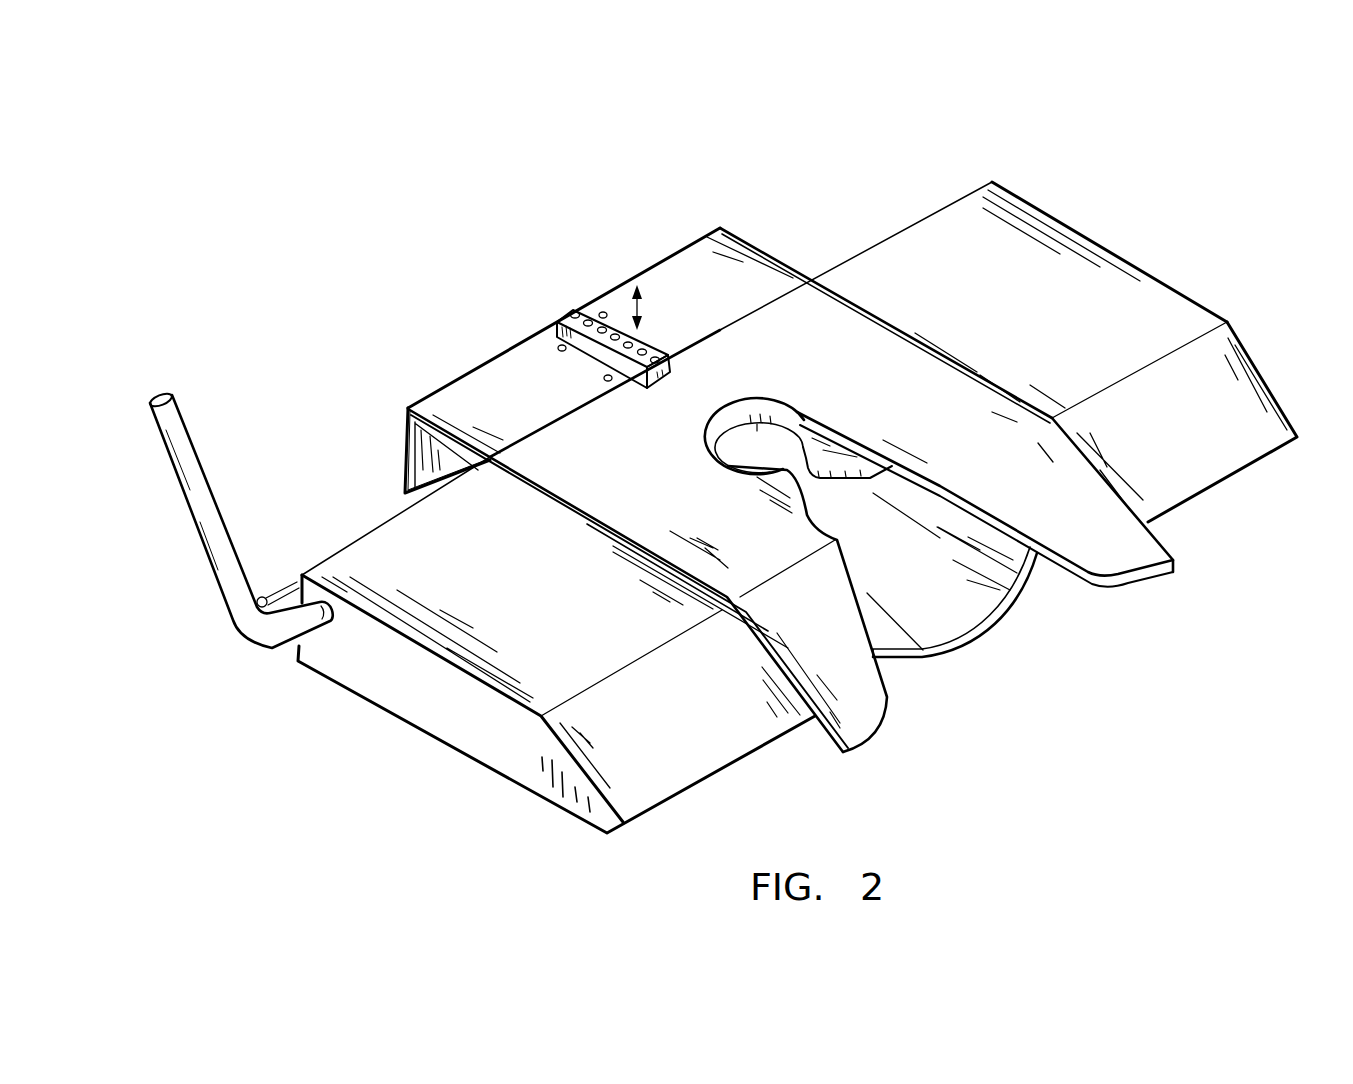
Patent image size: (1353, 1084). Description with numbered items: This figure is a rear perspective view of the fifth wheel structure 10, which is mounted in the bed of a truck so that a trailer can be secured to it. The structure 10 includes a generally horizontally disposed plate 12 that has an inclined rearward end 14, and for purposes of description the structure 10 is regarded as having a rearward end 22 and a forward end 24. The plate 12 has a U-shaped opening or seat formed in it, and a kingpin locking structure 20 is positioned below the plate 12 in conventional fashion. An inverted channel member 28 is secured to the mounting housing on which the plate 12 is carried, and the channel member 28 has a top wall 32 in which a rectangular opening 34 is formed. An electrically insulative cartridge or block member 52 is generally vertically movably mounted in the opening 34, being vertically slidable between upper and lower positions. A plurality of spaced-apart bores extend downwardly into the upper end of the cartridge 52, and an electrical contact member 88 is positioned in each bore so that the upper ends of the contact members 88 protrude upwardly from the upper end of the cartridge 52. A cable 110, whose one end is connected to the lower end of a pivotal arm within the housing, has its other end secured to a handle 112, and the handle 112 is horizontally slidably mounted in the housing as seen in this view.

The fifth wheel structure 10 is at (789, 200).
The plate 12 is at (625, 508).
The inclined rearward end 14 is at (1122, 593).
The kingpin locking structure 20 is at (827, 448).
The rearward end 22 is at (1083, 666).
The forward end 24 is at (482, 332).
The inverted channel member 28 is at (383, 431).
The top wall 32 is at (532, 427).
The rectangular opening 34 is at (597, 371).
The electrically insulative cartridge or block member 52 is at (661, 326).
The electrical contact member 88 is at (607, 323).
The cable 110 is at (289, 585).
The handle 112 is at (253, 509).